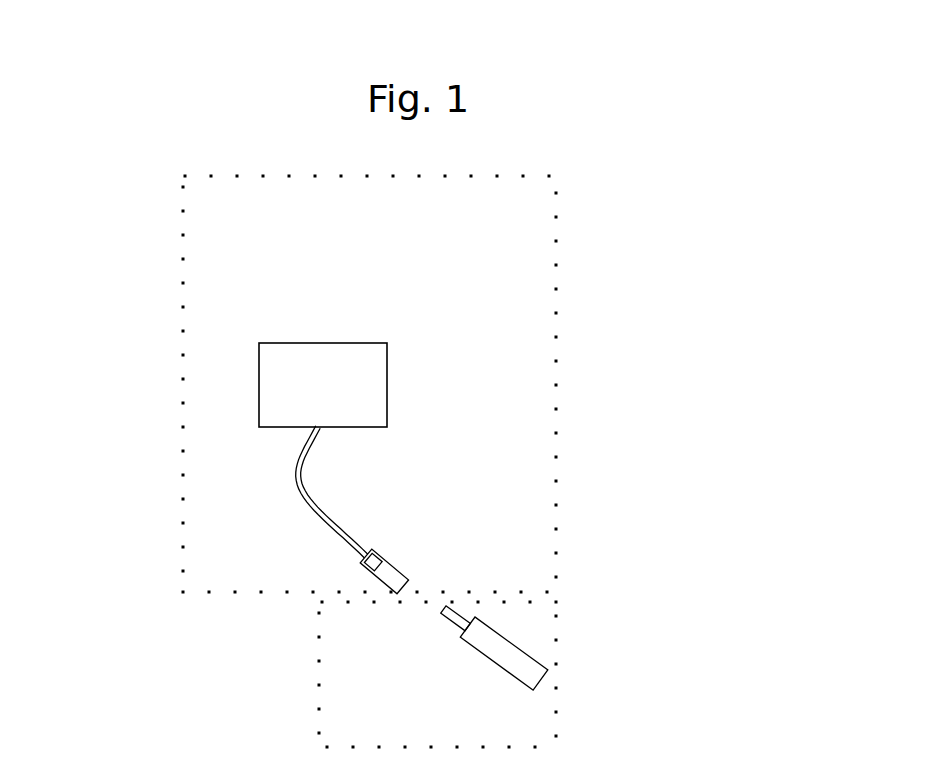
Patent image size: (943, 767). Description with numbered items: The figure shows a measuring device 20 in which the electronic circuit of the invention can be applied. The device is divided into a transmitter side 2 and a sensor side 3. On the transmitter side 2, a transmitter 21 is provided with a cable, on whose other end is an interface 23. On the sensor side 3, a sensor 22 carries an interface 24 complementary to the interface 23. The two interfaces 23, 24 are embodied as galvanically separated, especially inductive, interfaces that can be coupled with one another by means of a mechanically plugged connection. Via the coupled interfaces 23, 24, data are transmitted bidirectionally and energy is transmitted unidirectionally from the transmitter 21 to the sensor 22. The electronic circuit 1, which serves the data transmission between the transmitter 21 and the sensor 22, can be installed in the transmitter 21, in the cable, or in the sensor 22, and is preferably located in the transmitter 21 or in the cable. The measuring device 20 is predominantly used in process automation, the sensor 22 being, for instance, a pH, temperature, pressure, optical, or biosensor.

The measuring device 20 is at (680, 218).
The transmitter side 2 is at (567, 357).
The sensor side 3 is at (587, 658).
The transmitter 21 is at (344, 409).
The interface 23 is at (397, 575).
The electronic circuit 1 is at (363, 565).
The sensor 22 is at (523, 682).
The interface 24 is at (447, 610).